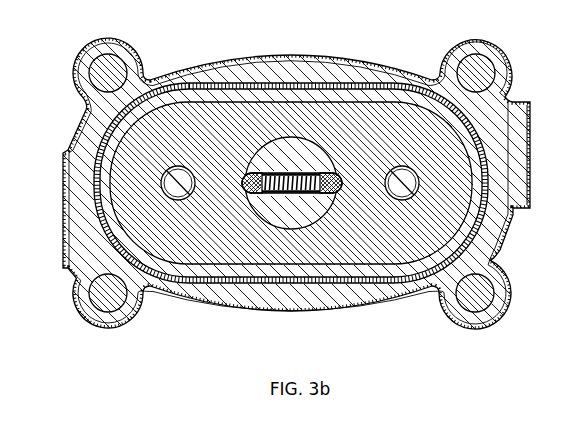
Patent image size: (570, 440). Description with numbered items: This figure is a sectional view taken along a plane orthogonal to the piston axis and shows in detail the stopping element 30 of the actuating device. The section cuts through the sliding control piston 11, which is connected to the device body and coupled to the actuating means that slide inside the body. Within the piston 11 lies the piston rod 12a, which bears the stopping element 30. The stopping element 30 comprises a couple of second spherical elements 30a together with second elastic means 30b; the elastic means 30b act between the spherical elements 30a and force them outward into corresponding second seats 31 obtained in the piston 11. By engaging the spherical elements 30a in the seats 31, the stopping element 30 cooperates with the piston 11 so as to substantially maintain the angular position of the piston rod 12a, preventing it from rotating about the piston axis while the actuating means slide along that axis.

The sliding control piston 11 is at (393, 135).
The piston rod 12a is at (293, 171).
The stopping element 30 is at (308, 186).
The second spherical elements 30a is at (243, 189).
The second elastic means 30b is at (299, 194).
The second seats 31 is at (238, 174).